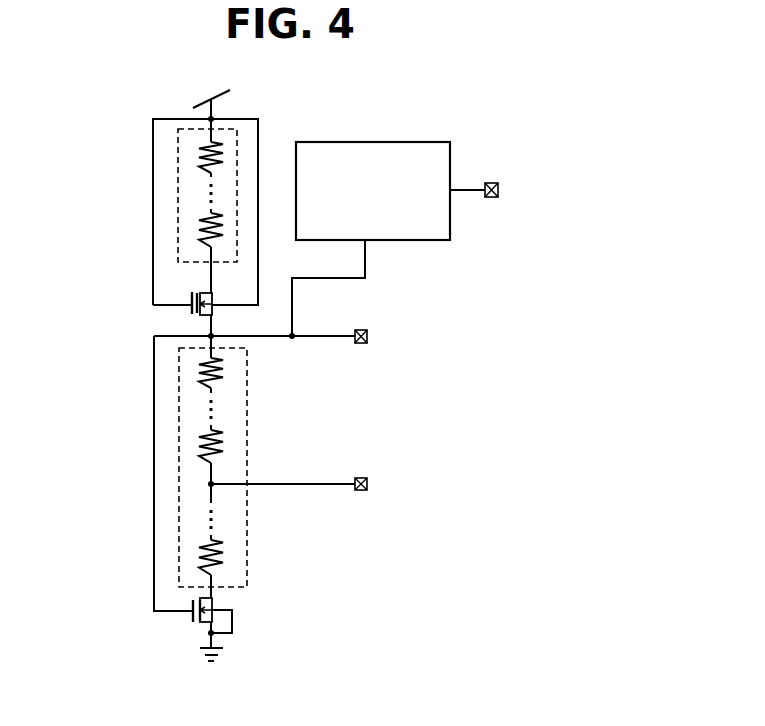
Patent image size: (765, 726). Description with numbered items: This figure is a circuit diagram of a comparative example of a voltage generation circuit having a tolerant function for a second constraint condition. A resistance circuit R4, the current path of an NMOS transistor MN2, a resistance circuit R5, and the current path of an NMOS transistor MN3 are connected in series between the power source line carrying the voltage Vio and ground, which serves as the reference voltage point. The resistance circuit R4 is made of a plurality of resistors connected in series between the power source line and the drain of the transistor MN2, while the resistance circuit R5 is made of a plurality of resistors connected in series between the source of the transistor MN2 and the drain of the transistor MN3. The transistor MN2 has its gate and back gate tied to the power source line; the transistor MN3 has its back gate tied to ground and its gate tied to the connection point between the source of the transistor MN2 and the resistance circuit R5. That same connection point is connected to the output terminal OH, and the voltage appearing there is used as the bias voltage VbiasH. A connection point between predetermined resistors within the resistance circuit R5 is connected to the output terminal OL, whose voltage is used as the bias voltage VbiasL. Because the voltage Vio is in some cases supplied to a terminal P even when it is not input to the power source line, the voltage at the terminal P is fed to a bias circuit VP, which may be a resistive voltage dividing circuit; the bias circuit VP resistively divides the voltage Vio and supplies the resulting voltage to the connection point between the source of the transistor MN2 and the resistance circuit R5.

The resistance circuit R4 is at (177, 186).
The resistance circuit R5 is at (180, 437).
The NMOS transistor MN2 is at (188, 302).
The NMOS transistor MN3 is at (194, 629).
The bias circuit VP is at (363, 142).
The terminal P is at (492, 197).
The output terminal OH is at (361, 343).
The output terminal OL is at (361, 490).
The voltage Vio is at (211, 101).
The bias voltage VbiasH is at (303, 319).
The bias voltage VbiasL is at (329, 509).